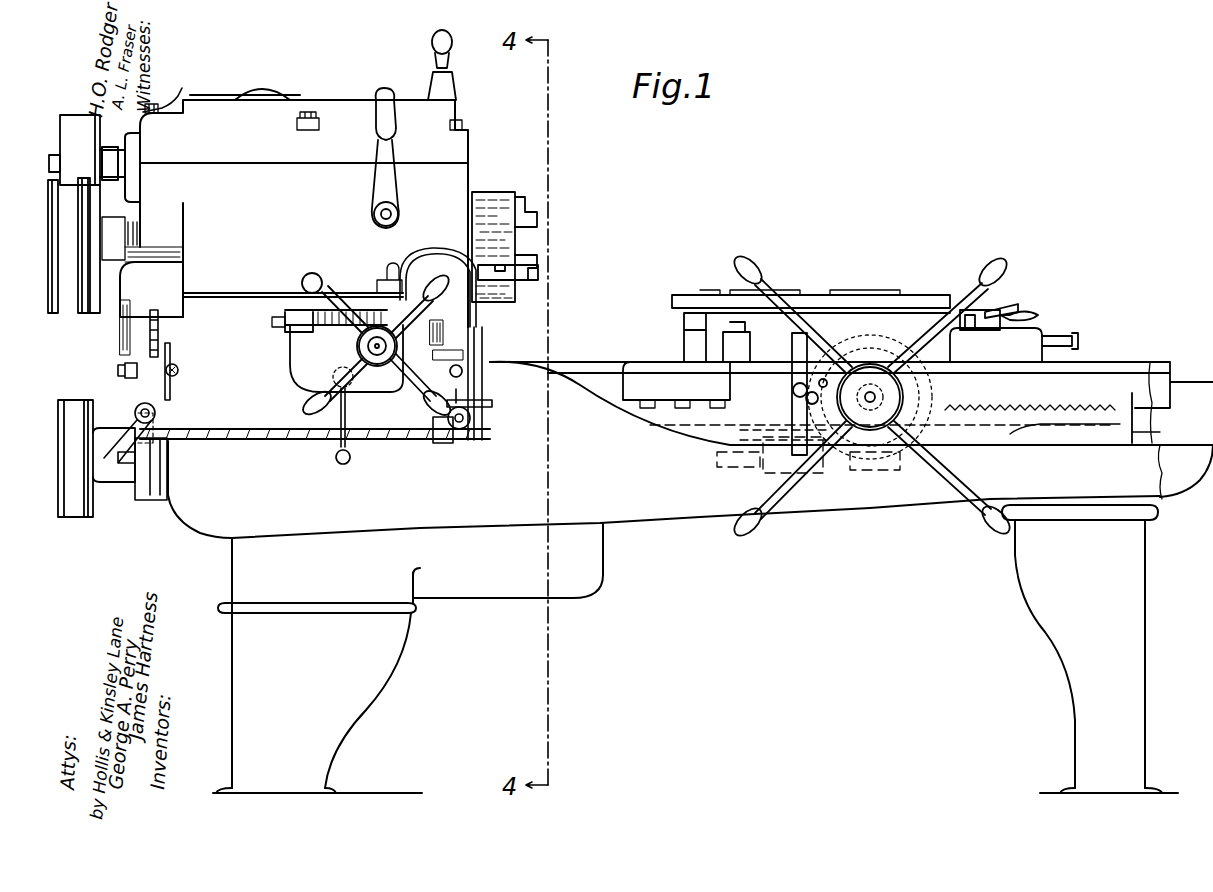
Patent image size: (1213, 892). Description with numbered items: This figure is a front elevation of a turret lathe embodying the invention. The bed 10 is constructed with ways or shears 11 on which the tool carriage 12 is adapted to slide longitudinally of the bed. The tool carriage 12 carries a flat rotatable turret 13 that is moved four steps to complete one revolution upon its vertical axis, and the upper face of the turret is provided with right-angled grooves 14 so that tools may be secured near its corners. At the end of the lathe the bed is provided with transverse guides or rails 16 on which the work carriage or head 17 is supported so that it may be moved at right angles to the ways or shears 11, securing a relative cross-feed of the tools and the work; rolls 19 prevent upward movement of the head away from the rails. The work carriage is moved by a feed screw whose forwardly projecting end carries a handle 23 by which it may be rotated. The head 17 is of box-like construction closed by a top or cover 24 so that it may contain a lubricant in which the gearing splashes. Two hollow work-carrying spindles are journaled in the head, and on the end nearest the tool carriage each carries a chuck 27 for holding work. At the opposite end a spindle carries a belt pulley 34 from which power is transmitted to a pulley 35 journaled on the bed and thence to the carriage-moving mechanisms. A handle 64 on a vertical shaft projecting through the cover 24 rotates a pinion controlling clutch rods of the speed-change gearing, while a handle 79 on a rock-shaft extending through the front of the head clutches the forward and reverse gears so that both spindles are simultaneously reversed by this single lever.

The bed 10 is at (668, 518).
The ways or shears 11 is at (1100, 364).
The tool carriage 12 is at (1020, 338).
The rotatable turret 13 is at (920, 296).
The right-angled grooves 14 is at (874, 296).
The transverse guides or rails 16 is at (439, 300).
The work carriage or head 17 is at (458, 183).
The rolls 19 is at (399, 340).
The handle 23 is at (363, 345).
The top or cover 24 is at (171, 87).
The chuck or work holder 27 is at (503, 245).
The belt pulley 34 is at (74, 303).
The pulley 35 is at (77, 510).
The handle 64 is at (438, 70).
The handle 79 is at (378, 124).